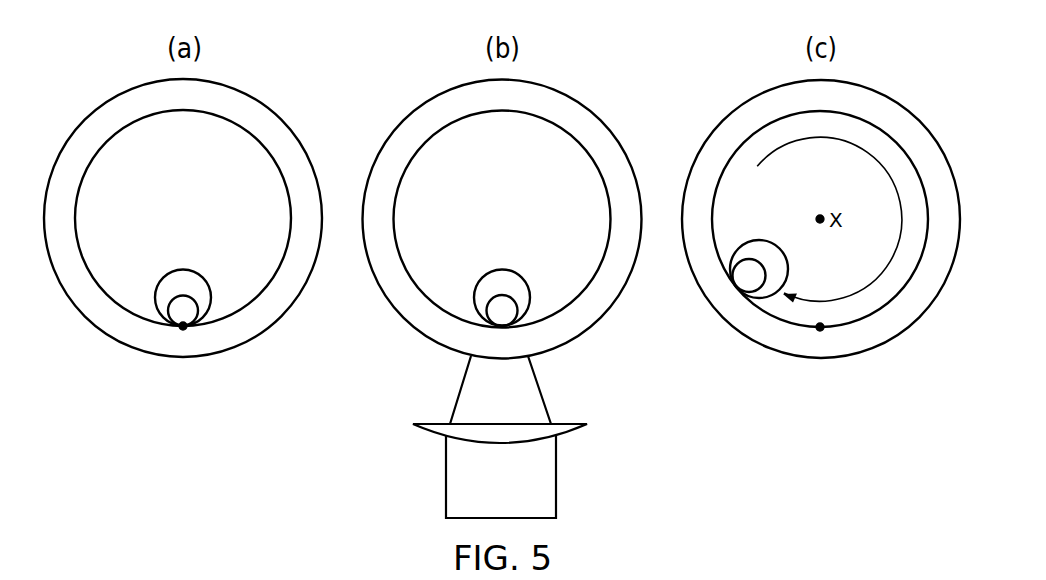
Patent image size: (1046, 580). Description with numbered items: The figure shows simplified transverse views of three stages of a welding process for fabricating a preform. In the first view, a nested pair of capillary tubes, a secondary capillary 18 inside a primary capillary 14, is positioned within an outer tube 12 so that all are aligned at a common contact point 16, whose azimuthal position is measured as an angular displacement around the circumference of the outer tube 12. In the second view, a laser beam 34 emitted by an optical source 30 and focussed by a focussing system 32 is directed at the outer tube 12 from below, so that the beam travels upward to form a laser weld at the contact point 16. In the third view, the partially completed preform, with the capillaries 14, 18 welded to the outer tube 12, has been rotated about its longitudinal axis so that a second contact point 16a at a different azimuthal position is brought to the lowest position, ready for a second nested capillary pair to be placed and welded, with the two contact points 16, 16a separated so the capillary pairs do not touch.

The outer tube 12 is at (258, 101).
The primary capillary 14 is at (182, 270).
The contact point 16 is at (184, 329).
The secondary capillary 18 is at (193, 297).
The optical source 30 is at (517, 494).
The focussing system 32 is at (566, 438).
The laser beam 34 is at (529, 400).
The second contact point 16a is at (821, 330).